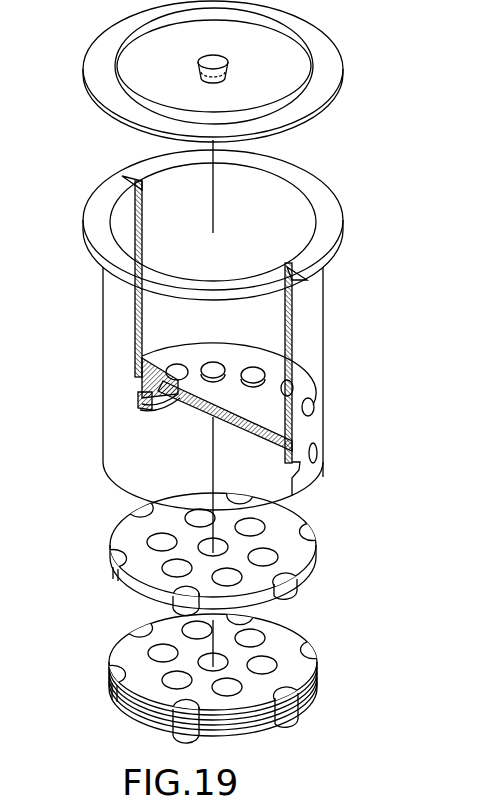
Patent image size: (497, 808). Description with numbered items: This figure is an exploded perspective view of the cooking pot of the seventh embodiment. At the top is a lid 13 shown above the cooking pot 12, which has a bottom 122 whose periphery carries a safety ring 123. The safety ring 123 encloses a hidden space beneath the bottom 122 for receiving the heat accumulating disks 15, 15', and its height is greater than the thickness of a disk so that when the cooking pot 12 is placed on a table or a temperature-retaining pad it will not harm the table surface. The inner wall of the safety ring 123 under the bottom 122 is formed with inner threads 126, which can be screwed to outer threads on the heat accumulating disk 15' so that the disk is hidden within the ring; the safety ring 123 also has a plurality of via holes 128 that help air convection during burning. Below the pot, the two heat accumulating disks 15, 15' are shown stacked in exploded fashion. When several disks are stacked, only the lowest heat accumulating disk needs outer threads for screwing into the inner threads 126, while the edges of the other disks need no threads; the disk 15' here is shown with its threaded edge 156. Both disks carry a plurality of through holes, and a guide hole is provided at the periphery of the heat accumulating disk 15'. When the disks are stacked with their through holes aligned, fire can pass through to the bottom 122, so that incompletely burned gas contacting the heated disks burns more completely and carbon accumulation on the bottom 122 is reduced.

The lid 13 is at (332, 50).
The cooking pot 12 is at (315, 366).
The bottom 122 is at (152, 358).
The safety ring 123 is at (166, 370).
The via holes 128 is at (140, 391).
The inner threads 126 is at (136, 406).
The heat accumulating disk 15 is at (216, 550).
The heat accumulating disk 15' is at (210, 666).
The stacked disc layers 156 is at (317, 688).